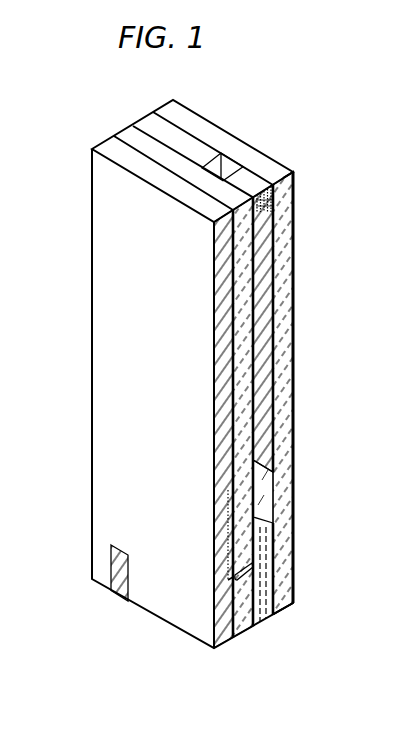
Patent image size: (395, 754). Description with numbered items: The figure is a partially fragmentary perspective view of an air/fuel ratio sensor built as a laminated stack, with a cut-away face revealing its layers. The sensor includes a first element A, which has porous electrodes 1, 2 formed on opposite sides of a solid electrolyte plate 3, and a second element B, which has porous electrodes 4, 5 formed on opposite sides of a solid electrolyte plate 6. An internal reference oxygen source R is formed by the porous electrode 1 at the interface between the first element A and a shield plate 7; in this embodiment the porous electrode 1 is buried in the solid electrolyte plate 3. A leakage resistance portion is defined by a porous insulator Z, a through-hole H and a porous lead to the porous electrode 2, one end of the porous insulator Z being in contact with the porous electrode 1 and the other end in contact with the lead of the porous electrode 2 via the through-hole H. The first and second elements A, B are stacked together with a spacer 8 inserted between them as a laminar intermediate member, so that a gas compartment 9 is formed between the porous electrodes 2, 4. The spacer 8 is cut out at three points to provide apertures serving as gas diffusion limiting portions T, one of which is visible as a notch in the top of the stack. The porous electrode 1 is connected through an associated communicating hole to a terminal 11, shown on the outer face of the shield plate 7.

The porous electrode 1 is at (230, 355).
The porous electrode 2 is at (257, 322).
The solid electrolyte plate 3 is at (252, 408).
The porous electrode 4 is at (275, 286).
The porous electrode 5 is at (296, 229).
The solid electrolyte plate 6 is at (294, 184).
The shield plate 7 is at (230, 586).
The spacer 8 is at (150, 120).
The gas compartment 9 is at (262, 496).
The terminal 11 is at (117, 547).
The internal reference oxygen source R is at (233, 322).
The gas diffusion limiting portion T is at (212, 150).
The porous insulator Z is at (226, 513).
The through-hole H is at (243, 566).
The first element A is at (243, 634).
The second element B is at (288, 613).